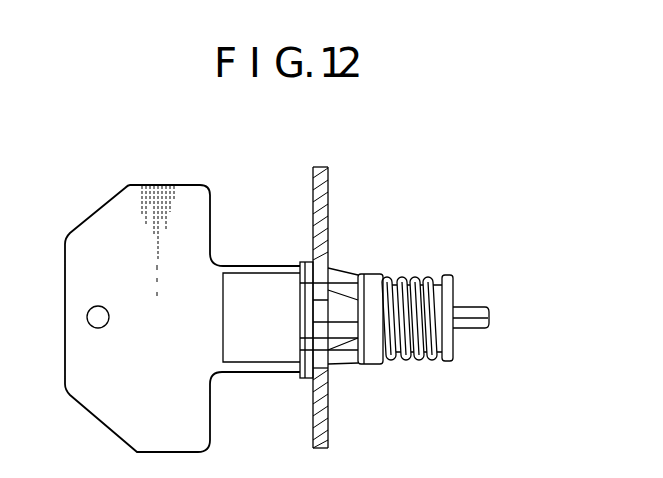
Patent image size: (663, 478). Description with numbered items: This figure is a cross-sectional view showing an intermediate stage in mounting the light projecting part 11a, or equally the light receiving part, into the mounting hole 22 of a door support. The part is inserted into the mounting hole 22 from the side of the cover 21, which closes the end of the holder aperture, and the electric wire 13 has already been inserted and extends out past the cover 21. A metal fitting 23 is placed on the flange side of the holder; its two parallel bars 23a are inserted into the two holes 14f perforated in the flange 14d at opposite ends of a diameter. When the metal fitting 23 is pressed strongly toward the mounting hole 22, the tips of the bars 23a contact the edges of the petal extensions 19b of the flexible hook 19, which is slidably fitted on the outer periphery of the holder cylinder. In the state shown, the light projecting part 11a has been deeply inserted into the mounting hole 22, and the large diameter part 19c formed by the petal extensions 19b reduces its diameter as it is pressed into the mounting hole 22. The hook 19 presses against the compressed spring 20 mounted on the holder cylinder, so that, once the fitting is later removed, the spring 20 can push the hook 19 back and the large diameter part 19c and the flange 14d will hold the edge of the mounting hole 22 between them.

The metal fitting 23 is at (103, 430).
The parallel bars 23a is at (246, 266).
The flange 14d is at (296, 385).
The holes 14f is at (300, 280).
The mounting hole 22 is at (333, 263).
The hook 19 is at (376, 273).
The petal extensions 19b is at (347, 272).
The large diameter part 19c is at (333, 383).
The compressed spring 20 is at (420, 362).
The light projecting part 11a is at (402, 374).
The cover 21 is at (454, 276).
The electric wire 13 is at (470, 330).